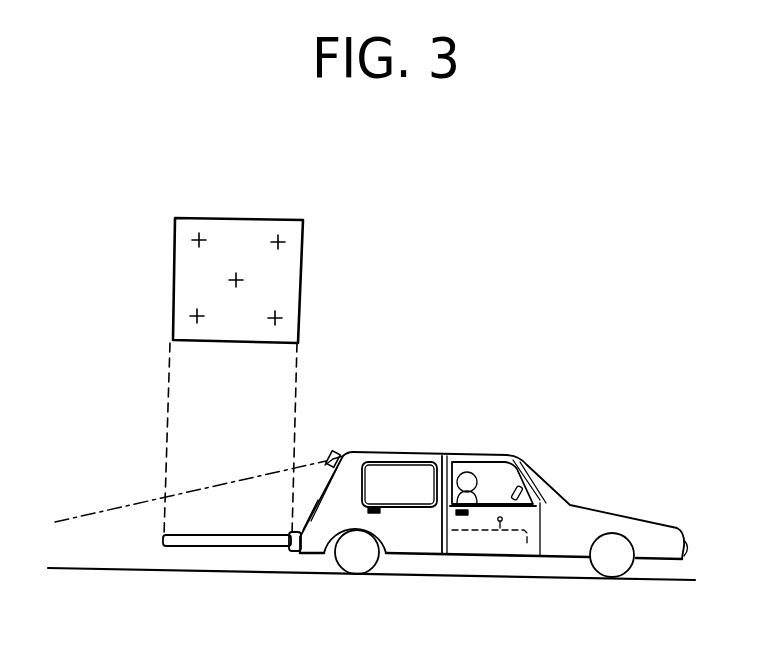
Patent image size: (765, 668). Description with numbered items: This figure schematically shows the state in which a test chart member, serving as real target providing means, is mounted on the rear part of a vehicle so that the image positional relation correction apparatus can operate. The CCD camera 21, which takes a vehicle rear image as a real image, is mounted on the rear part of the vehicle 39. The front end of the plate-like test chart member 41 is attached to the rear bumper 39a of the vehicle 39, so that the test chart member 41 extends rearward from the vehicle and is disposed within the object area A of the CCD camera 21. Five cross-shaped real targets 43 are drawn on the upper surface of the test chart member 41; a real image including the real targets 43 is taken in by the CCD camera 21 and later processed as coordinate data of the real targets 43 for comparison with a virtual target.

The real target 43 is at (205, 231).
The CCD camera 21 is at (340, 449).
The vehicle 39 is at (588, 500).
The rear bumper 39a is at (287, 551).
The test chart member 41 is at (177, 548).
The object area A is at (92, 508).